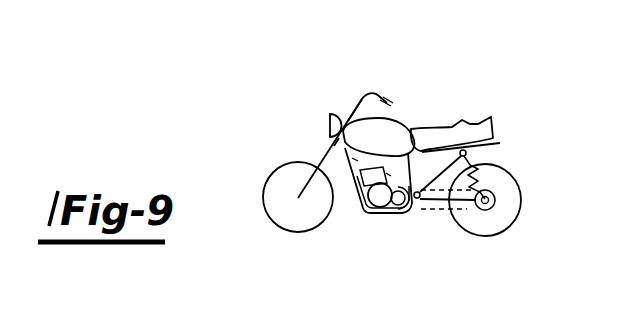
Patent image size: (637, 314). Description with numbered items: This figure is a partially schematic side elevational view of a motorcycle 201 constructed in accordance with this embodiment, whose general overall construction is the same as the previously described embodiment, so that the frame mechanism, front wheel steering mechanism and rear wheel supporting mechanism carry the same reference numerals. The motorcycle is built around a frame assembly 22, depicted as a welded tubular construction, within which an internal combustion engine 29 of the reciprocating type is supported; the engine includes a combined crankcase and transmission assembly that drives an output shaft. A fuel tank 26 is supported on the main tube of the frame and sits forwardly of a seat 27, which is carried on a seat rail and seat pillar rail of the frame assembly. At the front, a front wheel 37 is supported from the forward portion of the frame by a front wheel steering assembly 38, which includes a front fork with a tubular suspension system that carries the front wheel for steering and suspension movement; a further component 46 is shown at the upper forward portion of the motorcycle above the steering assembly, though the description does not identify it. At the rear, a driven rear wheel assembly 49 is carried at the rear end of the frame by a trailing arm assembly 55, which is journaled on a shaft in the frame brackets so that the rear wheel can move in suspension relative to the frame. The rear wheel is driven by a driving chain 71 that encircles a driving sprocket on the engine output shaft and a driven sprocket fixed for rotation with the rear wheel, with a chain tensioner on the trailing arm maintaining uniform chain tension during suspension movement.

The motorcycle 201 is at (438, 96).
The fairing 46 is at (374, 96).
The fuel tank 26 is at (399, 121).
The seat 27 is at (480, 127).
The front wheel steering assembly 38 is at (322, 158).
The front wheel 37 is at (285, 234).
The engine 29 is at (360, 213).
The frame assembly 22 is at (380, 213).
The driving chain 71 is at (421, 209).
The trailing arm assembly 55 is at (443, 205).
The rear wheel assembly 49 is at (503, 232).